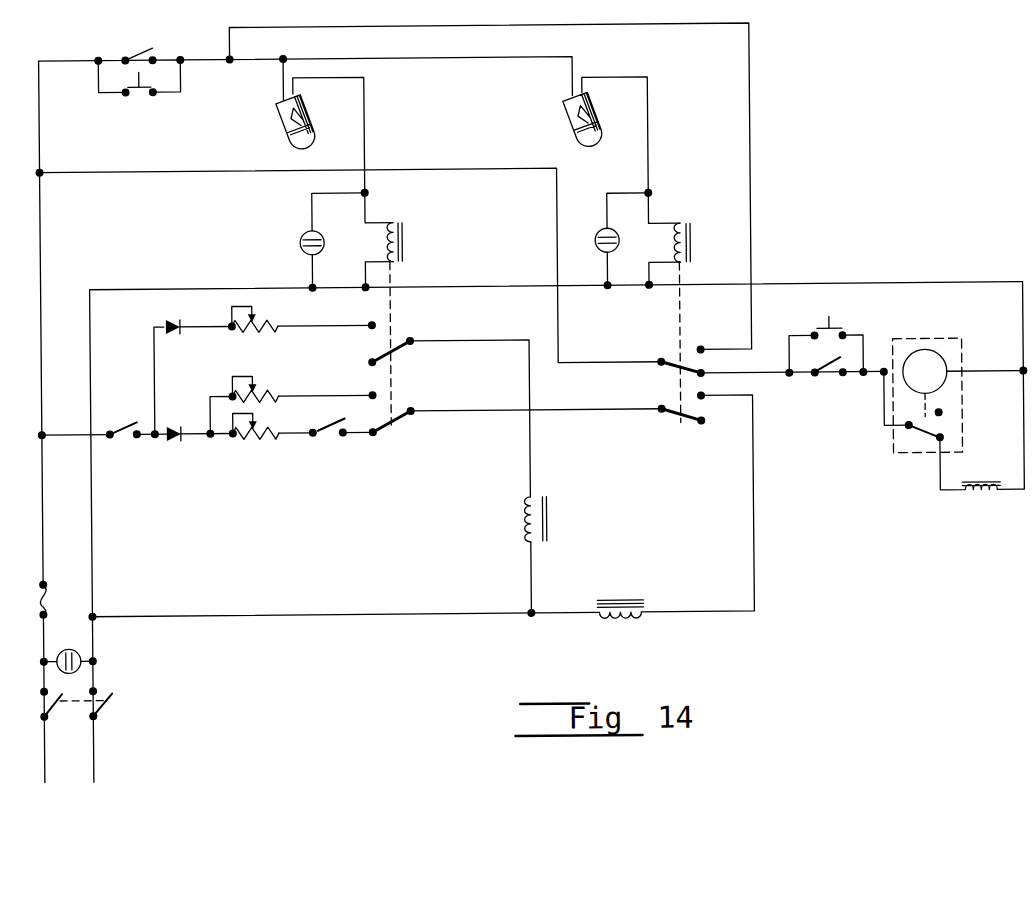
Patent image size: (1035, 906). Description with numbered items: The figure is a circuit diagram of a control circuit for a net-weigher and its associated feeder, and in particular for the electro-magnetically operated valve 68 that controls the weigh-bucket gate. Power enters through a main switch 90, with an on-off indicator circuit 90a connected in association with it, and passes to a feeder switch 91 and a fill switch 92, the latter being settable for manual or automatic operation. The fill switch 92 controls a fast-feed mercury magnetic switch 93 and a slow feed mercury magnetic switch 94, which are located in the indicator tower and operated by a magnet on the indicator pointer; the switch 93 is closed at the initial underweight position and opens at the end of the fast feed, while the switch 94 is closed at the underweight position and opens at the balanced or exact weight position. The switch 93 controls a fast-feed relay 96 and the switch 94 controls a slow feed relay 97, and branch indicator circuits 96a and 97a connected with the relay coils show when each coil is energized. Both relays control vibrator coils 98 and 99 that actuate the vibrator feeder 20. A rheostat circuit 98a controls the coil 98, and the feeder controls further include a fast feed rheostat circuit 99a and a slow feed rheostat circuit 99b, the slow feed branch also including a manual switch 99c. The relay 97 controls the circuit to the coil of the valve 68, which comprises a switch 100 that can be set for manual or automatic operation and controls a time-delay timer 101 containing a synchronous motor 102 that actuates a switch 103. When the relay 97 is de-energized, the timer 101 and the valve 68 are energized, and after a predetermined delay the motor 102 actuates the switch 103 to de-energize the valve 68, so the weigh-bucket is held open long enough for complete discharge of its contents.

The fill switch 92 is at (121, 79).
The fast-feed mercury magnetic switch 93 is at (280, 115).
The slow feed mercury magnetic switch 94 is at (568, 118).
The branch indicator circuit 96a is at (311, 204).
The fast-feed relay 96 is at (408, 246).
The branch indicator circuit 97a is at (605, 207).
The slow feed relay 97 is at (688, 250).
The rheostat circuit 98a is at (301, 326).
The fast feed rheostat circuit 99a is at (318, 386).
The slow feed rheostat circuit 99b is at (294, 436).
The manual switch 99c is at (329, 438).
The feeder switch 91 is at (132, 442).
The vibrator feeder 20 is at (242, 447).
The vibrator coil 98 is at (521, 516).
The vibrator coil 99 is at (623, 595).
The switch 100 is at (849, 329).
The time-delay timer 101 is at (892, 444).
The synchronous motor 102 is at (929, 352).
The switch 103 is at (944, 426).
The electromagnetic valve 68 is at (979, 503).
The main switch 90 is at (105, 690).
The on-off indicator circuit 90a is at (68, 647).